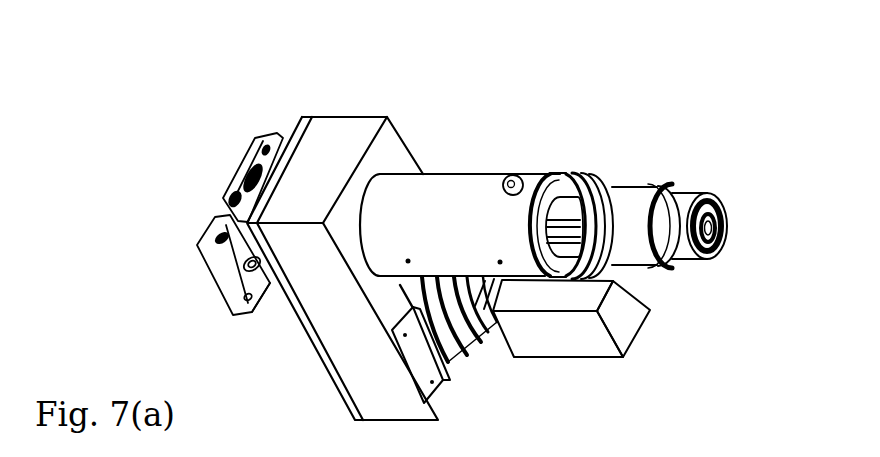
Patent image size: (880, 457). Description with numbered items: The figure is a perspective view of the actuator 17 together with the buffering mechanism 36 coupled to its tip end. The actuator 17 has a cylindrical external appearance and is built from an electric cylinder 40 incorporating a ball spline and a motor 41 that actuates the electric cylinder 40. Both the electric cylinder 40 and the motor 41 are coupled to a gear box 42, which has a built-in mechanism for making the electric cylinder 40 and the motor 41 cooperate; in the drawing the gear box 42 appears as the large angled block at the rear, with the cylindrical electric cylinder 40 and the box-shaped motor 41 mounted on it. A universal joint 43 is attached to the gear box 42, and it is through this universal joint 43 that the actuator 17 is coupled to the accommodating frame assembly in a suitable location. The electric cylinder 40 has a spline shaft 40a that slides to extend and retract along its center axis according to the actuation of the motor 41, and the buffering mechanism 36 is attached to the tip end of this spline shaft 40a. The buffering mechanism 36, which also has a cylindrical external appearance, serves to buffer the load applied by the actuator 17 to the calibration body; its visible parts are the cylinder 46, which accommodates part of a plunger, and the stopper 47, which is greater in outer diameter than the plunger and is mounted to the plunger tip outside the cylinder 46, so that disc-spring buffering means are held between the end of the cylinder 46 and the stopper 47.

The actuator 17 is at (714, 79).
The buffering mechanism 36 is at (707, 160).
The electric cylinder 40 is at (474, 159).
The spline shaft 40a is at (570, 193).
The motor 41 is at (629, 338).
The gear box 42 is at (327, 122).
The universal joint 43 is at (232, 155).
The cylinder 46 is at (648, 256).
The stopper 47 is at (724, 252).